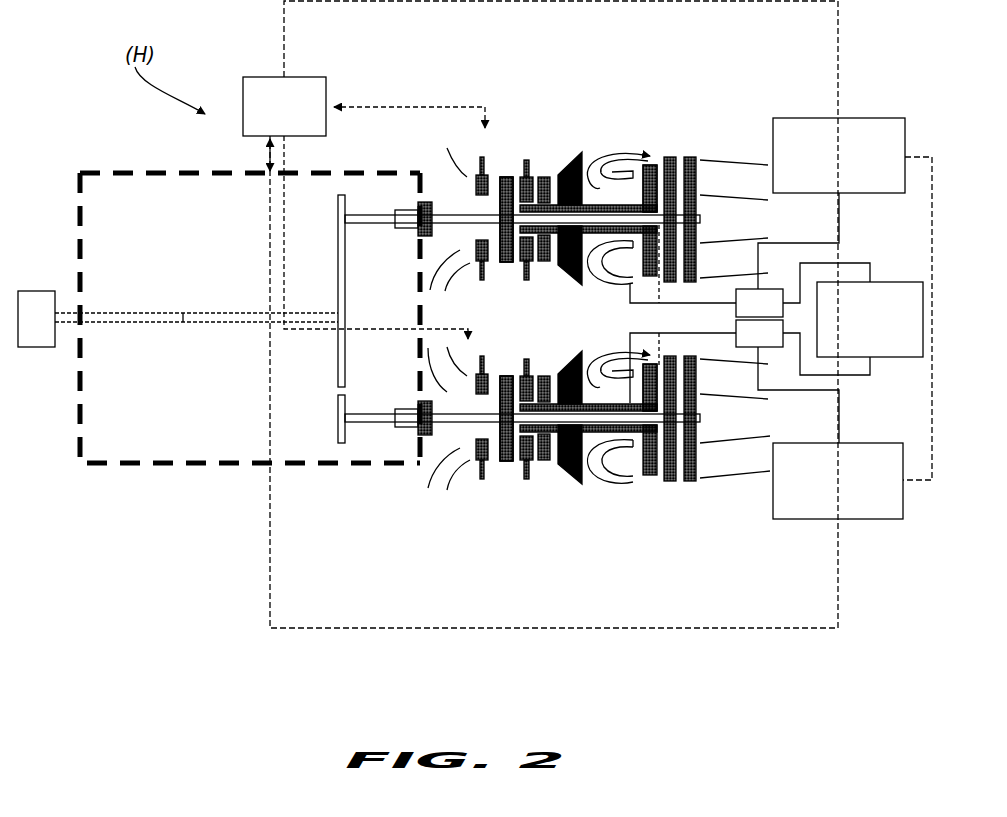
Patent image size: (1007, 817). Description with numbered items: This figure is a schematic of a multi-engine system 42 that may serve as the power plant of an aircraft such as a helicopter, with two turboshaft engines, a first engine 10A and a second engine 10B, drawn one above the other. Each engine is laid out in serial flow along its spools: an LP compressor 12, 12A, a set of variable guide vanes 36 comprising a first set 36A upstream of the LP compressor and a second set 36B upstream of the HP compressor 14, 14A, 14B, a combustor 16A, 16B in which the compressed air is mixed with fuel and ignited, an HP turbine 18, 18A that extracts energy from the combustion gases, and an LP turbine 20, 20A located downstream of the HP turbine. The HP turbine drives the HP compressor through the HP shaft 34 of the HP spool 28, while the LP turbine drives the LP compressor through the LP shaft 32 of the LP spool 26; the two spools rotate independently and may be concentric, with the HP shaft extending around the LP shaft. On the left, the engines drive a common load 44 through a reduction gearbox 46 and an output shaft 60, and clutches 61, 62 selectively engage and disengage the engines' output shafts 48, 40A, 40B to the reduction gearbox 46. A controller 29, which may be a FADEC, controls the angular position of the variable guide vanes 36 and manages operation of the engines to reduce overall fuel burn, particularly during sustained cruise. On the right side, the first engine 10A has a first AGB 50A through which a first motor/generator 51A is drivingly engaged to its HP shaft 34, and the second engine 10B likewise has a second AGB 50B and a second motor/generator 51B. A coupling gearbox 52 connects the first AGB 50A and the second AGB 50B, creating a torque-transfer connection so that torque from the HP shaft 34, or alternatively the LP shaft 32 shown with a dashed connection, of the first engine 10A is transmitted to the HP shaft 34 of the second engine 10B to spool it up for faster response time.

The first engine 10A is at (673, 84).
The second engine 10B is at (647, 537).
The LP compressor 12 is at (508, 176).
The LP compressor of first engine 12A is at (506, 319).
The HP compressor 14 is at (532, 141).
The HP compressor of first engine 14A is at (543, 177).
The HP compressor of second engine 14B is at (543, 380).
The turbine of second engine 16A is at (609, 492).
The turbine of first engine 16B is at (613, 293).
The HP turbine 18 is at (633, 147).
The HP turbine of first engine 18A is at (645, 164).
The LP turbine 20 is at (668, 355).
The LP turbine of first engine 20A is at (690, 157).
The LP spool 26 is at (702, 220).
The HP spool 28 is at (592, 185).
The controller 29 is at (325, 78).
The LP shaft 32 is at (560, 217).
The HP shaft 34 is at (645, 232).
The variable guide vanes 36 is at (478, 492).
The first set of variable guide vanes 36A is at (473, 277).
The second set of variable guide vanes 36B is at (517, 274).
The output shaft of first engine 40A is at (450, 214).
The output shaft of second engine 40B is at (448, 424).
The multi-engine system 42 is at (122, 124).
The rotor / load 44 is at (37, 290).
The reduction gearbox 46 is at (186, 466).
The output shaft 48 is at (370, 214).
The first AGB 50A is at (775, 289).
The second AGB 50B is at (773, 348).
The first motor/generator 51A is at (800, 117).
The second motor/generator 51B is at (797, 520).
The coupling gearbox 52 is at (905, 281).
The output shaft 60 is at (67, 325).
The clutch 61 is at (428, 192).
The clutch 62 is at (407, 402).